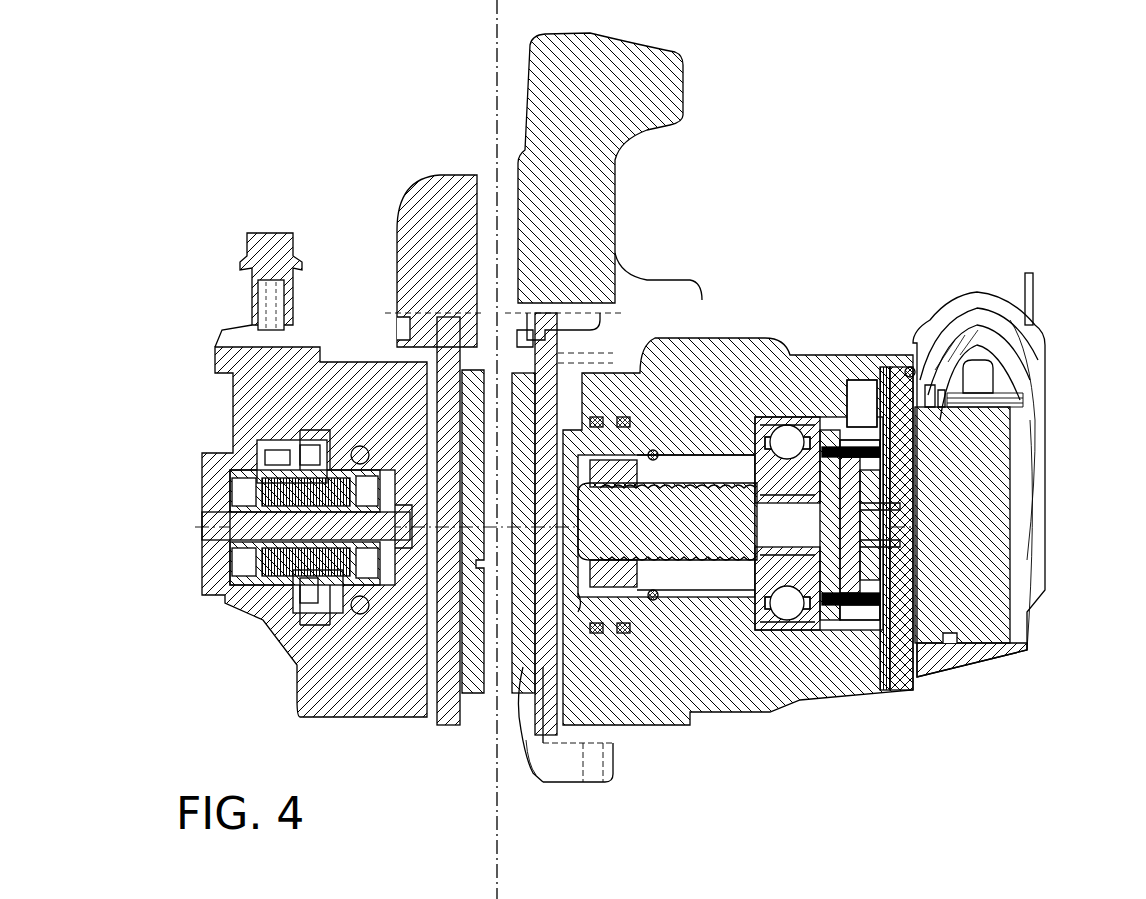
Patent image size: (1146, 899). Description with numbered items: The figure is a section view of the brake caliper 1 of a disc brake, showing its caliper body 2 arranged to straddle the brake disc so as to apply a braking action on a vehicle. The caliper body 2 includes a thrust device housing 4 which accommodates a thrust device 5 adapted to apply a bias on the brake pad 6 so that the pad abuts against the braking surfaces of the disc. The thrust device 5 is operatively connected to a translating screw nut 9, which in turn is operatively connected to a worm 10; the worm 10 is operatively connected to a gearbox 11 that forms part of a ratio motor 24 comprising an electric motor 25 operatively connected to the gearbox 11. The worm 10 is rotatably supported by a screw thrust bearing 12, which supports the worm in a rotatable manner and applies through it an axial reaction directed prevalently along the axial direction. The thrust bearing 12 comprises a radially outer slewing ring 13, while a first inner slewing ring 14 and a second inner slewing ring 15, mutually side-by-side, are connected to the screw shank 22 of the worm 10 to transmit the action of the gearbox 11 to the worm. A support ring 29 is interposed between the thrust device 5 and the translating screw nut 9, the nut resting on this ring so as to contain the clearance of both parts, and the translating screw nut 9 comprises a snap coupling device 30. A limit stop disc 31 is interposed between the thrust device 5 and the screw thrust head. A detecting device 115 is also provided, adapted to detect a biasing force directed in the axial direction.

The brake caliper 1 is at (765, 206).
The caliper body 2 is at (575, 248).
The thrust device housing 4 is at (703, 578).
The thrust device 5 is at (600, 540).
The brake pad 6 is at (540, 778).
The translating screw nut 9 is at (762, 632).
The worm 10 is at (857, 567).
The gearbox 11 is at (845, 450).
The screw thrust bearing 12 is at (822, 455).
The radially outer slewing ring 13 is at (832, 600).
The first inner slewing ring 14 is at (835, 520).
The second inner slewing ring 15 is at (745, 640).
The screw shank 22 is at (852, 515).
The ratio motor 24 is at (1050, 345).
The electric motor 25 is at (1045, 390).
The support ring 29 is at (617, 467).
The snap coupling device 30 is at (677, 523).
The limit stop disc 31 is at (583, 600).
The detecting device 115 is at (178, 555).